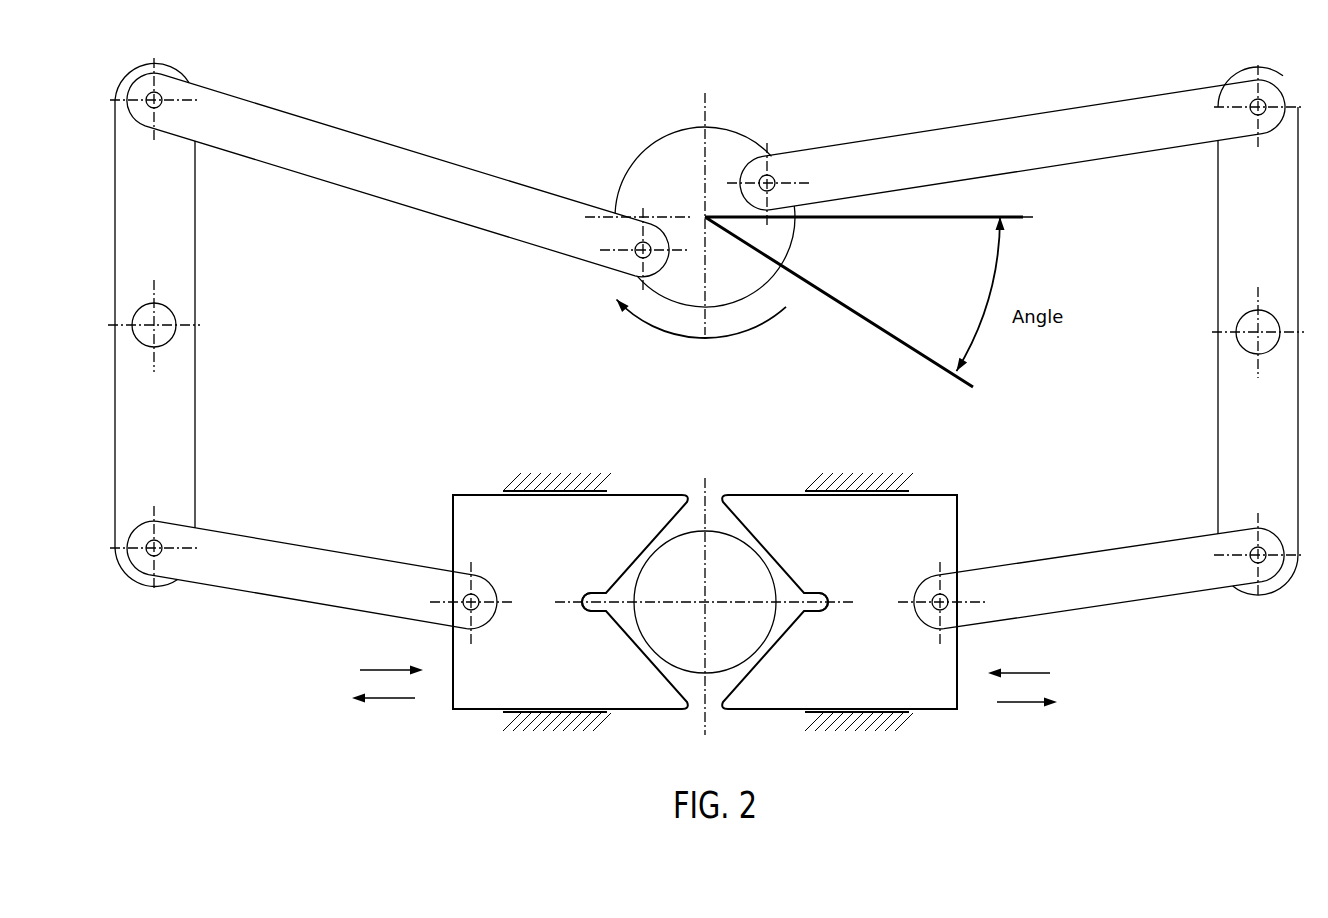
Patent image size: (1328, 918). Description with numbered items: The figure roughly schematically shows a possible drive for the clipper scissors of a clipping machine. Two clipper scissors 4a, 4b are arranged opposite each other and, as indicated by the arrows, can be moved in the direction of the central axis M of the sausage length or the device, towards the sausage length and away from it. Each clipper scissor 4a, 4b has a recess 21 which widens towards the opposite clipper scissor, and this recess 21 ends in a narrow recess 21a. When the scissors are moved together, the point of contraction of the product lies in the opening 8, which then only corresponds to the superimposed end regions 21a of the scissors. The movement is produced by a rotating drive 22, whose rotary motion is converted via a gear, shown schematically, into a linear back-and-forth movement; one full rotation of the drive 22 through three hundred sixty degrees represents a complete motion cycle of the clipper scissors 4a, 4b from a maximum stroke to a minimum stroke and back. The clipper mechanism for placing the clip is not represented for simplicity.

The rotating drive 22 is at (738, 130).
The clipper scissor 4a is at (640, 507).
The clipper scissor 4b is at (757, 507).
The recess 21 is at (758, 658).
The narrow recess 21a is at (595, 611).
The central axis M is at (708, 600).
The opening 8 is at (705, 714).